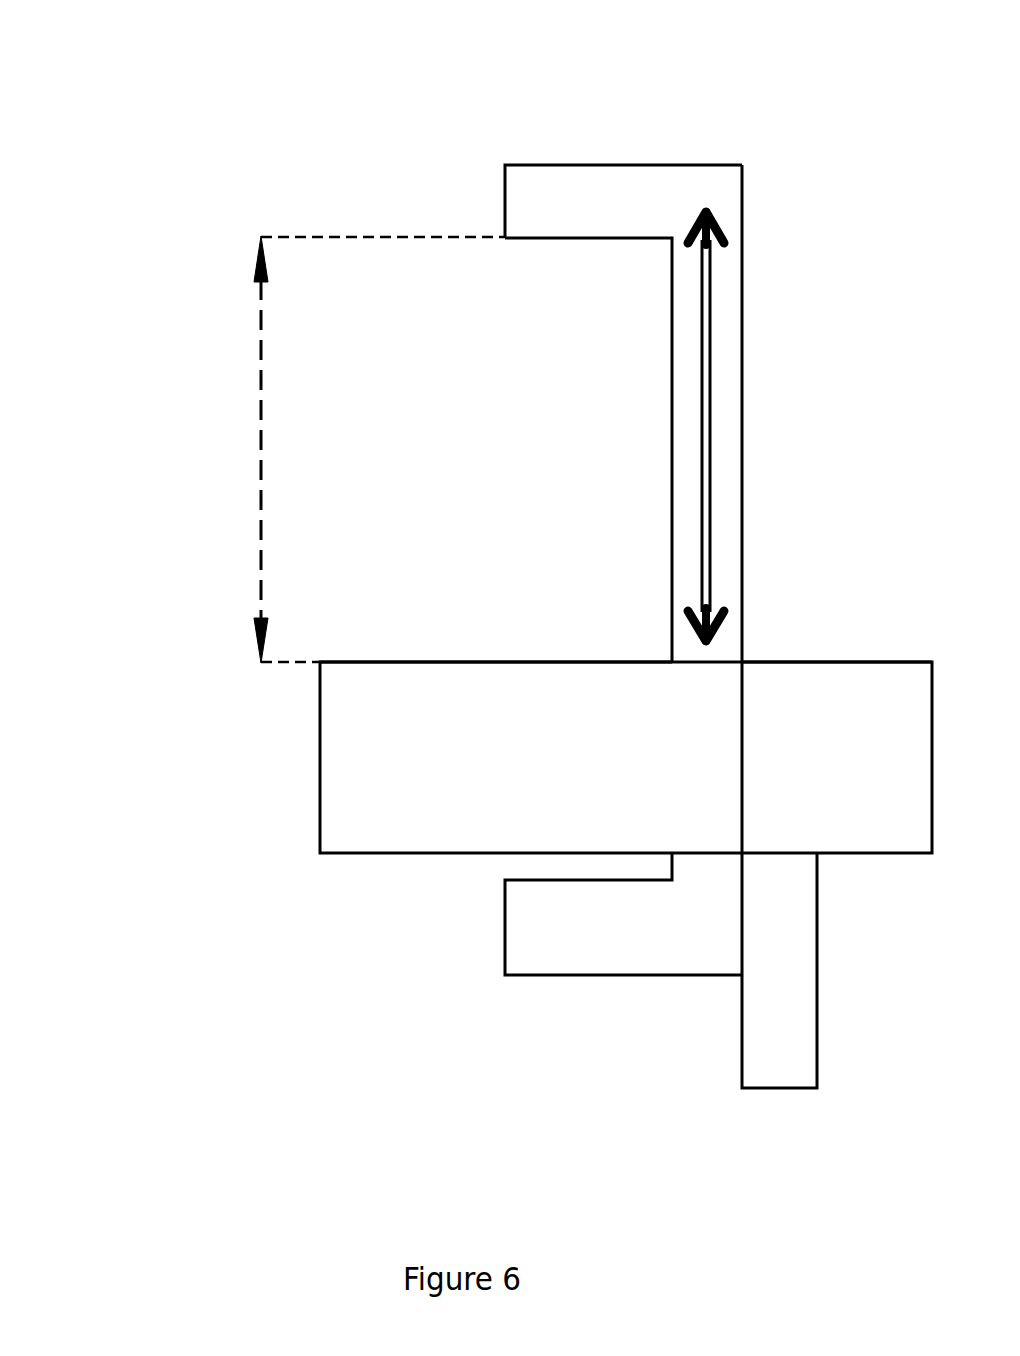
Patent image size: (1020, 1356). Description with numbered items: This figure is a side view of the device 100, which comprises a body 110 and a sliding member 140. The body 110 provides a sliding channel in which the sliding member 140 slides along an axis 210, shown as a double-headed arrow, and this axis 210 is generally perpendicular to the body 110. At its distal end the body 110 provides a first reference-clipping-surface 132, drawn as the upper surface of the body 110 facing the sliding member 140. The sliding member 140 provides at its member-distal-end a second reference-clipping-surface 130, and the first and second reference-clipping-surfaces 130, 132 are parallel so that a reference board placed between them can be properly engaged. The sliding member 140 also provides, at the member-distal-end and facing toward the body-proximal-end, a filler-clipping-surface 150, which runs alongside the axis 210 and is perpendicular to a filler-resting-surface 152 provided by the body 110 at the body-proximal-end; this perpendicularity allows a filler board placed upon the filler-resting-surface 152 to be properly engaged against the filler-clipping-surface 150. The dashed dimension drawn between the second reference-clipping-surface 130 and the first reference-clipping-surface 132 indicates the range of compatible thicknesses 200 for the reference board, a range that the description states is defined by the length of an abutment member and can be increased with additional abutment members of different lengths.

The device 100 is at (100, 160).
The body 110 is at (432, 762).
The second reference-clipping-surface 130 is at (540, 238).
The first reference-clipping-surface 132 is at (557, 662).
The sliding member 140 is at (602, 208).
The filler-clipping-surface 150 is at (743, 366).
The filler-resting-surface 152 is at (853, 662).
The range of compatible thicknesses 200 is at (260, 541).
The axis 210 is at (703, 289).